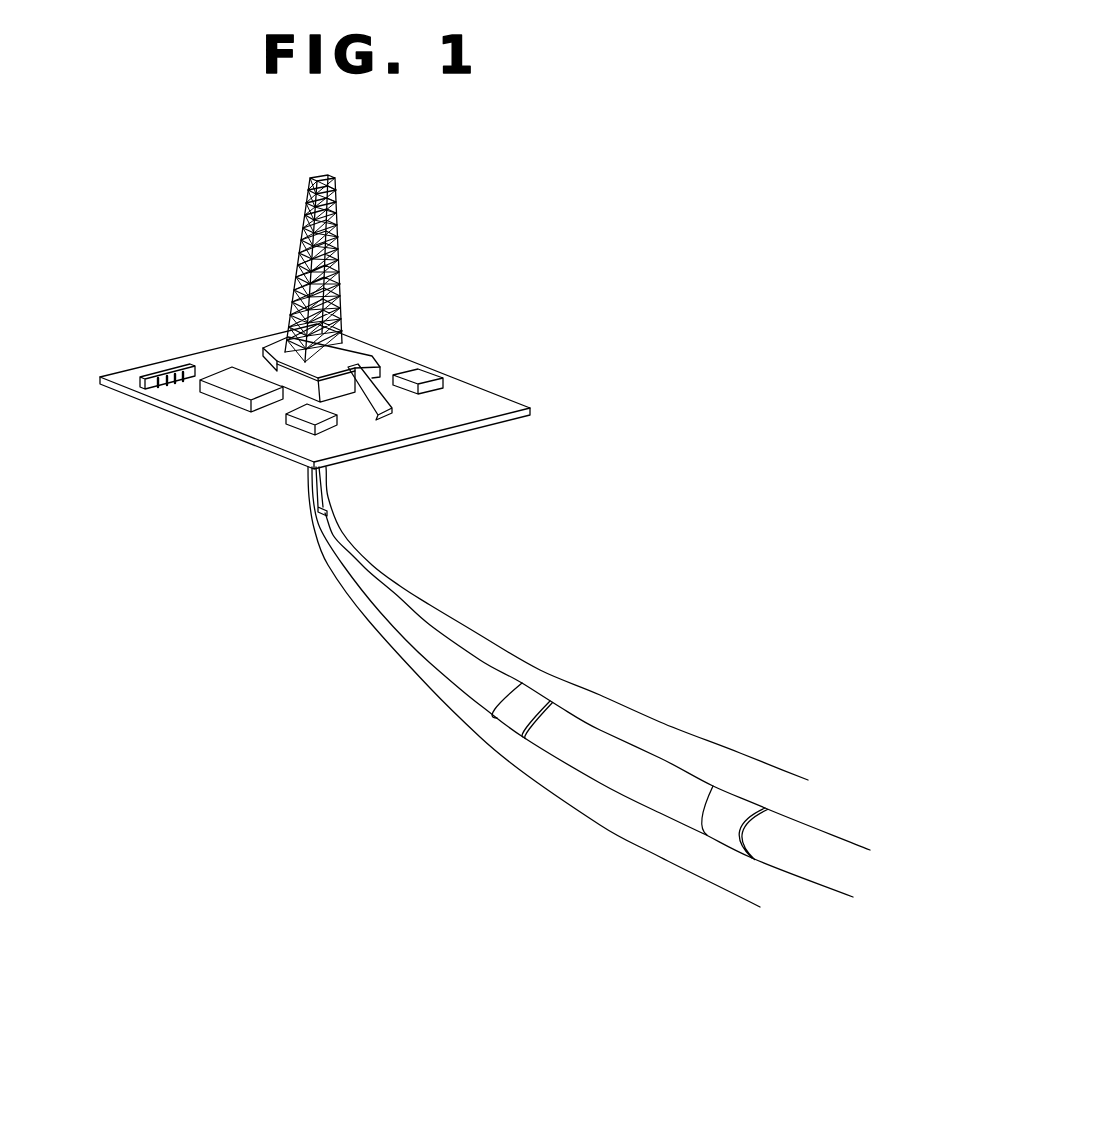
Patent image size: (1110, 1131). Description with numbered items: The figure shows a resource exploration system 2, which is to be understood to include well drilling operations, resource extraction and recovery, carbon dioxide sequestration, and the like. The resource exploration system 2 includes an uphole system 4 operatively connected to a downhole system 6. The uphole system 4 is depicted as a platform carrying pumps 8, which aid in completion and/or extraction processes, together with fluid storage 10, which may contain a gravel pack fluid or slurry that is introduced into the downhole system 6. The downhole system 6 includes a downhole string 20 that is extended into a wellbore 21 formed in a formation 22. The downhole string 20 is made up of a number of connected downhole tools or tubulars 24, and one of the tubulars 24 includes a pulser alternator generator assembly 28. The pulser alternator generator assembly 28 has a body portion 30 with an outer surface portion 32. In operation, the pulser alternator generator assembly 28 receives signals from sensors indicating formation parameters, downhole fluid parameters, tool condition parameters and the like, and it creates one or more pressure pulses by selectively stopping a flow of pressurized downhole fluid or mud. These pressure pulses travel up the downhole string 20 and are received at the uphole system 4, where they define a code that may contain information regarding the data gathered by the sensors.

The resource exploration system 2 is at (620, 250).
The uphole system 4 is at (192, 258).
The downhole system 6 is at (350, 798).
The pumps 8 is at (222, 358).
The fluid storage 10 is at (400, 353).
The downhole string 20 is at (242, 547).
The wellbore 21 is at (372, 565).
The formation 22 is at (277, 697).
The tubulars 24 is at (443, 648).
The pulser alternator generator assembly 28 is at (673, 843).
The body portion 30 is at (582, 763).
The outer surface portion 32 is at (688, 787).